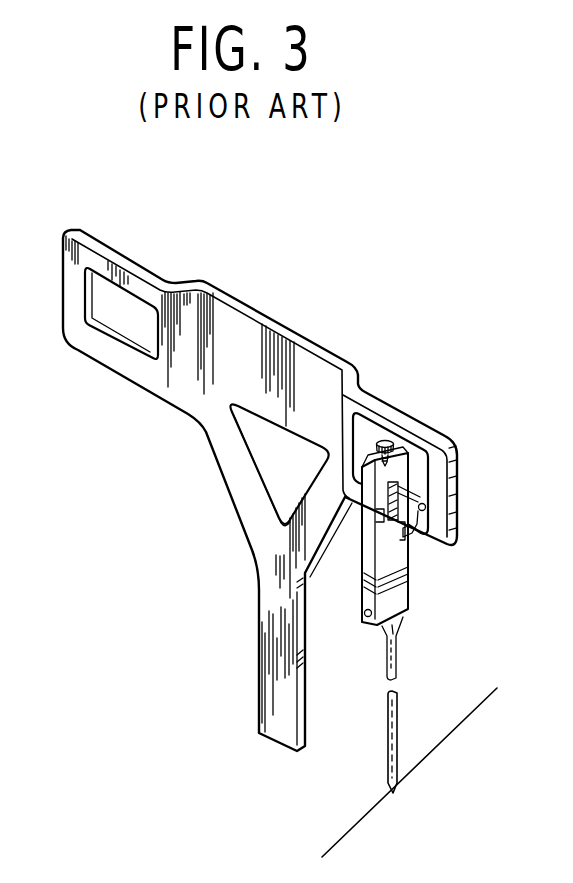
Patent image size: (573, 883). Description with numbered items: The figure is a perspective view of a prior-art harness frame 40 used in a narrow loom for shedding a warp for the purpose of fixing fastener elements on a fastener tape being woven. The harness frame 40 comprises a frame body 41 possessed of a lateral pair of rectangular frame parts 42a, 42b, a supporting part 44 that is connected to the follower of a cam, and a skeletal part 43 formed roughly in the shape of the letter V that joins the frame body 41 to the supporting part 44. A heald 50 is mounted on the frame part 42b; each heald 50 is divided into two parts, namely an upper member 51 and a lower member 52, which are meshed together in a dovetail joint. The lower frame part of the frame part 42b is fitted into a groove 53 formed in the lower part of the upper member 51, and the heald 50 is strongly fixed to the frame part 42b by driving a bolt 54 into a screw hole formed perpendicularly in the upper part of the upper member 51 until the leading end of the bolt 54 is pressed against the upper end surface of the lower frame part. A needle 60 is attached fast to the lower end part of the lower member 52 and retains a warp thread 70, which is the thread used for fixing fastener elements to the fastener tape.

The harness frame 40 is at (316, 328).
The frame body 41 is at (255, 309).
The rectangular frame part 42a is at (138, 272).
The rectangular frame part 42b is at (413, 421).
The skeletal part 43 is at (235, 496).
The supporting part 44 is at (259, 648).
The heald 50 is at (441, 520).
The upper member 51 is at (400, 462).
The lower member 52 is at (406, 585).
The groove 53 is at (398, 488).
The bolt 54 is at (386, 441).
The needle 60 is at (398, 707).
The warp thread 70 is at (420, 763).